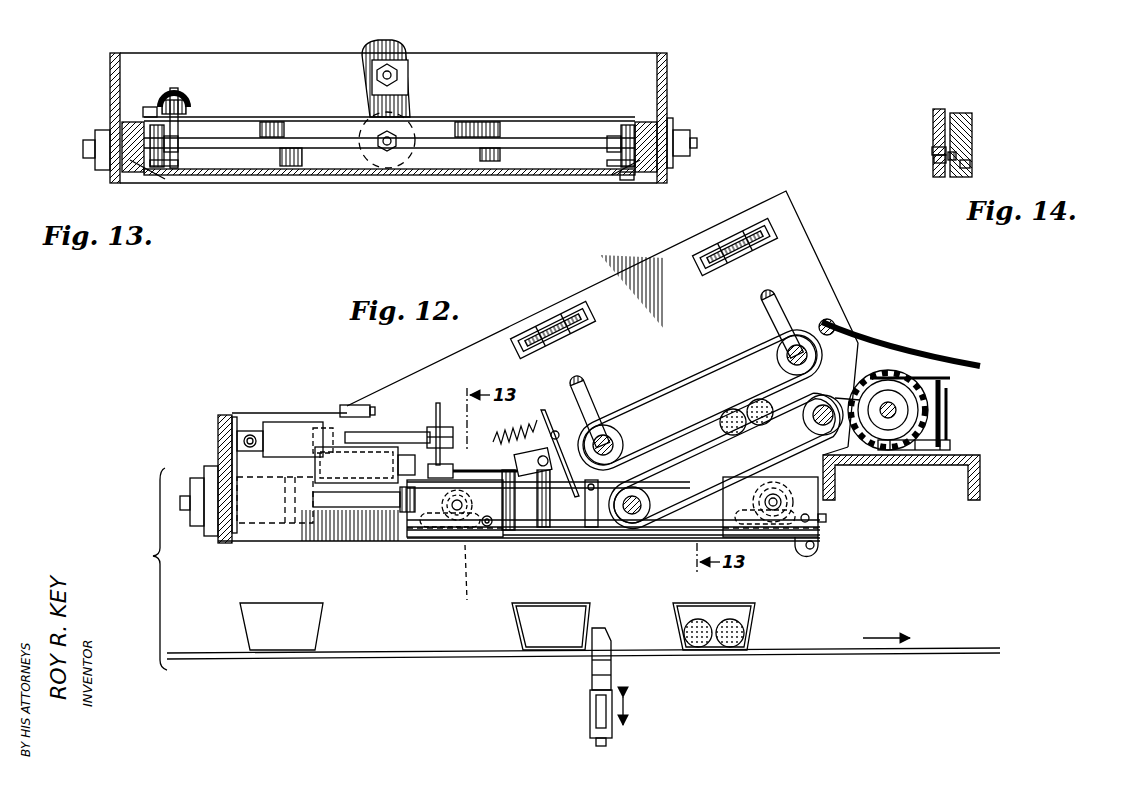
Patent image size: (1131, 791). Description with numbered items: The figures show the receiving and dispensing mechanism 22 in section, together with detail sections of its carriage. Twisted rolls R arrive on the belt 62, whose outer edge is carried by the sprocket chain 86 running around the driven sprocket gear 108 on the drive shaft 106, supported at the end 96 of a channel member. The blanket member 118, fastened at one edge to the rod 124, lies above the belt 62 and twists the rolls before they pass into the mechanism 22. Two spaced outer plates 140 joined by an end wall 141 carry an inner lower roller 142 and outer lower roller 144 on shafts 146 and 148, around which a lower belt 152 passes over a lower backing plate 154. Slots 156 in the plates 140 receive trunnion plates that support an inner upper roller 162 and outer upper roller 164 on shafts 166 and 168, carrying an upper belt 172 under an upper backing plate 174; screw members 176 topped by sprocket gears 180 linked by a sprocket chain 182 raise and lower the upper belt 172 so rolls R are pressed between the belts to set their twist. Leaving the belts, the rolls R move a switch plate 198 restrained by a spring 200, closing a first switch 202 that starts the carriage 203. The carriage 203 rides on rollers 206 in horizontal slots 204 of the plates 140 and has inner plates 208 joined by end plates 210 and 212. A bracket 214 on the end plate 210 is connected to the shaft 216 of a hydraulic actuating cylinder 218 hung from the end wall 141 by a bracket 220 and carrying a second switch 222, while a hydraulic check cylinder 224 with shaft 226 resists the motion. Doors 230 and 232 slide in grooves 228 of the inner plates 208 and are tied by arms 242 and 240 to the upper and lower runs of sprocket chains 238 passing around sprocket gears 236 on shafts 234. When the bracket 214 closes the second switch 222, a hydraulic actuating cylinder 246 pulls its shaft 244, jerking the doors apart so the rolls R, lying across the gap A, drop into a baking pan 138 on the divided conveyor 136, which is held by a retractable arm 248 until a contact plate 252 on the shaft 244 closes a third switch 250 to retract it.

In FIG. 12, the receiving and dispensing mechanism 22 is at (437, 356).
In FIG. 12, the belt 62 is at (892, 378).
In FIG. 12, the sprocket chain 86 is at (910, 452).
In FIG. 12, the end of channel member 96 is at (920, 466).
In FIG. 12, the drive shaft 106 is at (900, 410).
In FIG. 12, the driven sprocket gear 108 is at (920, 412).
In FIG. 12, the blanket member 118 is at (915, 355).
In FIG. 12, the rod 124 is at (838, 324).
In FIG. 12, the divided conveyor 136 is at (415, 652).
In FIG. 12, the baking pan 138 is at (315, 615).
In FIG. 13, the outer plate 140 is at (110, 72).
In FIG. 14, the outer plate 140 is at (945, 115).
In FIG. 12, the outer plate 140 is at (800, 250).
In FIG. 13, the end wall 141 is at (555, 58).
In FIG. 12, the end wall 141 is at (218, 420).
In FIG. 12, the inner lower roller 142 is at (825, 430).
In FIG. 12, the outer lower roller 144 is at (665, 532).
In FIG. 12, the inner lower shaft 146 is at (755, 458).
In FIG. 12, the outer lower shaft 148 is at (634, 496).
In FIG. 12, the lower belt 152 is at (750, 470).
In FIG. 12, the lower backing plate 154 is at (762, 430).
In FIG. 12, the slot 156 is at (588, 388).
In FIG. 12, the inner upper roller 162 is at (797, 345).
In FIG. 12, the outer upper roller 164 is at (605, 440).
In FIG. 12, the shaft 166 is at (790, 360).
In FIG. 12, the shaft 168 is at (620, 441).
In FIG. 12, the upper belt 172 is at (698, 385).
In FIG. 12, the upper backing plate 174 is at (683, 388).
In FIG. 12, the screw member 176 is at (580, 386).
In FIG. 12, the sprocket gear 180 is at (735, 238).
In FIG. 12, the sprocket chain 182 is at (566, 318).
In FIG. 12, the switch plate 198 is at (575, 470).
In FIG. 12, the spring 200 is at (525, 420).
In FIG. 12, the first switch 202 is at (545, 455).
In FIG. 12, the carriage 203 is at (462, 552).
In FIG. 14, the horizontal slot 204 is at (932, 160).
In FIG. 13, the roller 206 is at (118, 180).
In FIG. 14, the roller 206 is at (930, 151).
In FIG. 13, the inner plate 208 is at (133, 180).
In FIG. 14, the inner plate 208 is at (970, 124).
In FIG. 12, the inner plate 208 is at (487, 530).
In FIG. 12, the end plate 210 is at (405, 541).
In FIG. 12, the end plate 212 is at (820, 517).
In FIG. 13, the bracket 214 is at (395, 100).
In FIG. 12, the bracket 214 is at (455, 392).
In FIG. 12, the shaft 216 is at (395, 432).
In FIG. 13, the hydraulic actuating cylinder 218 is at (410, 64).
In FIG. 12, the hydraulic actuating cylinder 218 is at (300, 422).
In FIG. 12, the bracket 220 is at (250, 433).
In FIG. 12, the second switch 222 is at (353, 405).
In FIG. 13, the hydraulic check cylinder 224 is at (355, 114).
In FIG. 12, the hydraulic check cylinder 224 is at (268, 515).
In FIG. 12, the shaft 226 is at (345, 502).
In FIG. 13, the groove 228 is at (625, 183).
In FIG. 14, the groove 228 is at (970, 164).
In FIG. 12, the groove 228 is at (472, 573).
In FIG. 12, the door 230 is at (545, 538).
In FIG. 13, the door 232 is at (312, 176).
In FIG. 12, the door 232 is at (645, 530).
In FIG. 13, the shaft 234 is at (445, 150).
In FIG. 12, the shaft 234 is at (770, 512).
In FIG. 13, the sprocket gear 236 is at (160, 168).
In FIG. 13, the sprocket chain 238 is at (170, 166).
In FIG. 12, the sprocket chain 238 is at (560, 530).
In FIG. 13, the arm 240 is at (180, 160).
In FIG. 12, the arm 240 is at (690, 541).
In FIG. 13, the arm 242 is at (180, 133).
In FIG. 12, the arm 242 is at (550, 507).
In FIG. 12, the shaft 244 is at (485, 477).
In FIG. 13, the hydraulic actuating cylinder 246 is at (186, 94).
In FIG. 12, the hydraulic actuating cylinder 246 is at (365, 465).
In FIG. 12, the retractable arm 248 is at (615, 690).
In FIG. 13, the third switch 250 is at (150, 99).
In FIG. 12, the third switch 250 is at (448, 462).
In FIG. 13, the contact plate 252 is at (140, 112).
In FIG. 12, the contact plate 252 is at (516, 500).
In FIG. 12, the gap A is at (628, 540).
In FIG. 12, the twisted rolls R is at (770, 402).